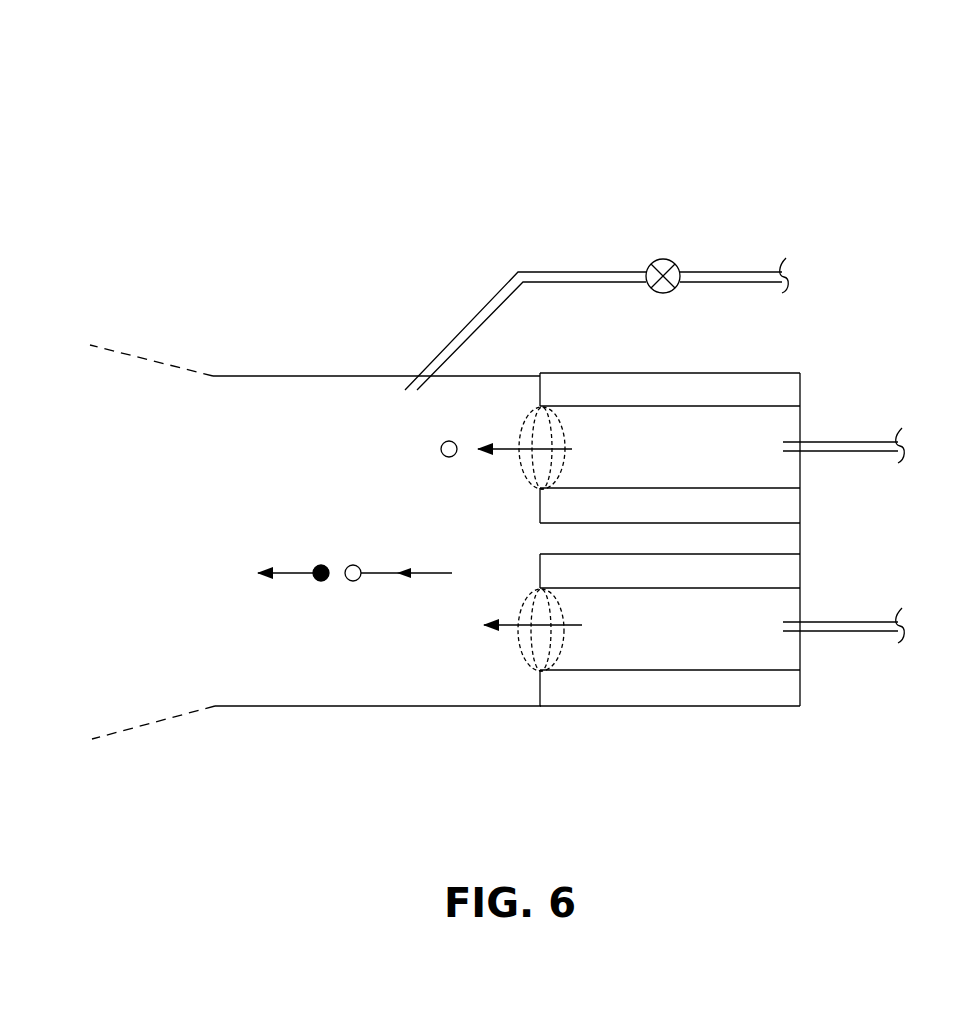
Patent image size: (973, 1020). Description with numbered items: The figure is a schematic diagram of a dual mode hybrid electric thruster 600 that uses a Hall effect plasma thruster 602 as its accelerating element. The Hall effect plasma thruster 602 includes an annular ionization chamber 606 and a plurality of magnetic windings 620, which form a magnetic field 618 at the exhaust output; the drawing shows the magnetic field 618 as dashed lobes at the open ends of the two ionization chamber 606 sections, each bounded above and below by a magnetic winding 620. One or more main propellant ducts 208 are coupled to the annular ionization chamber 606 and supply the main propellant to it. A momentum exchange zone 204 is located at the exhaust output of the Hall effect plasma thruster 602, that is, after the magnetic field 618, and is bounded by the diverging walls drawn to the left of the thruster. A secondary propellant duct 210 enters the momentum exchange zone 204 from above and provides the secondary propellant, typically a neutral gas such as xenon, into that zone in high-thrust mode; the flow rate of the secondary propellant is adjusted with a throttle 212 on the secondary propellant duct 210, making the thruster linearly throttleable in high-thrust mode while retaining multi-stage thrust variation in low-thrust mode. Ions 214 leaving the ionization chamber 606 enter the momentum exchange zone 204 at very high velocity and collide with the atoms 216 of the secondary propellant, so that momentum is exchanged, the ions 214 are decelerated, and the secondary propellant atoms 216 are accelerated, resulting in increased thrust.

The dual mode hybrid electric thruster 600 is at (846, 104).
The momentum exchange zone 204 is at (312, 407).
The main propellant duct 208 is at (833, 619).
The secondary propellant duct 210 is at (466, 320).
The throttle 212 is at (670, 258).
The ion 214 is at (432, 458).
The secondary propellant atom 216 is at (312, 555).
The Hall effect plasma thruster 602 is at (802, 405).
The annular ionization chamber 606 is at (651, 458).
The magnetic field 618 is at (558, 417).
The magnetic winding 620 is at (651, 398).